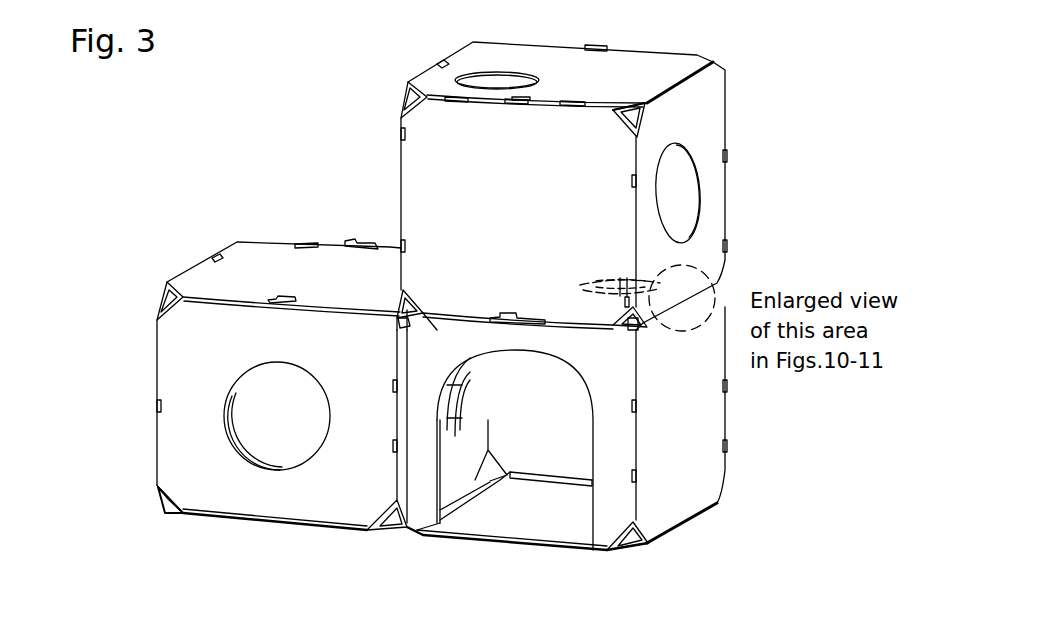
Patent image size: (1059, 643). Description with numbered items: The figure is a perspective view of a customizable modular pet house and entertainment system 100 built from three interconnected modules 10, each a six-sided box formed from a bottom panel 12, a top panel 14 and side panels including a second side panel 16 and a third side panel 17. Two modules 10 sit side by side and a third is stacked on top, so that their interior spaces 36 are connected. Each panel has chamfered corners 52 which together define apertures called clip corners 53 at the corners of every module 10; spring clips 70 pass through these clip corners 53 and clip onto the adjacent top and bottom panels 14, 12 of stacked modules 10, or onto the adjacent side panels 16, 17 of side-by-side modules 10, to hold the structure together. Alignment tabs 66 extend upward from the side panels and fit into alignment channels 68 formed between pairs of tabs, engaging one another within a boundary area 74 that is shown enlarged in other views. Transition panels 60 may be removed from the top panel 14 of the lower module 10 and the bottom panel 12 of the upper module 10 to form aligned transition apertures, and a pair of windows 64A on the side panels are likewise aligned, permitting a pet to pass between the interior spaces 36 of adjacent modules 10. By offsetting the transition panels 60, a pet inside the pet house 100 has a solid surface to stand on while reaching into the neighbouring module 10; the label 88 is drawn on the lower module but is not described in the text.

The modular pet house and entertainment system 100 is at (281, 146).
The top panel 14 is at (632, 67).
The module 10 is at (712, 100).
The clip corners 53 is at (407, 91).
The chamfered corners 52 is at (633, 130).
The alignment tabs 66 is at (367, 243).
The alignment channels 68 is at (508, 333).
The clips 70 is at (412, 322).
The boundary area 74 is at (698, 272).
The interior space 36 is at (266, 371).
The windows 64A is at (462, 385).
The transition panels 60 is at (462, 418).
The second side panel 16 is at (370, 432).
The third side panel 17 is at (431, 426).
The floor panel 88 is at (576, 466).
The bottom panel 12 is at (322, 528).